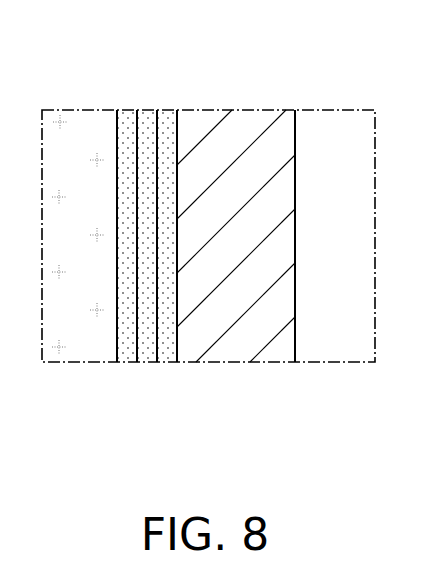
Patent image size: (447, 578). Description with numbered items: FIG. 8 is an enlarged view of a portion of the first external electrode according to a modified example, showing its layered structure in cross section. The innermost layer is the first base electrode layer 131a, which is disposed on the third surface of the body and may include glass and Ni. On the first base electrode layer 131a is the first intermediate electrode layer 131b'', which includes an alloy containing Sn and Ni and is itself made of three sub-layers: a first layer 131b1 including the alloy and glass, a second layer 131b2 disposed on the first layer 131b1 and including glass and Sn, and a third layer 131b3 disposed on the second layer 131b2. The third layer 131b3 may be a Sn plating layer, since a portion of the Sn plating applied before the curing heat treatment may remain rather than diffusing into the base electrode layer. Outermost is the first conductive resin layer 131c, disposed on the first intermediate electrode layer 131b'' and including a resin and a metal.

The first base electrode layer 131a is at (238, 138).
The first intermediate electrode layer 131b'' is at (155, 287).
The first layer 131b1 is at (215, 269).
The second layer 131b2 is at (148, 350).
The third layer 131b3 is at (123, 350).
The first conductive resin layer 131c is at (82, 138).